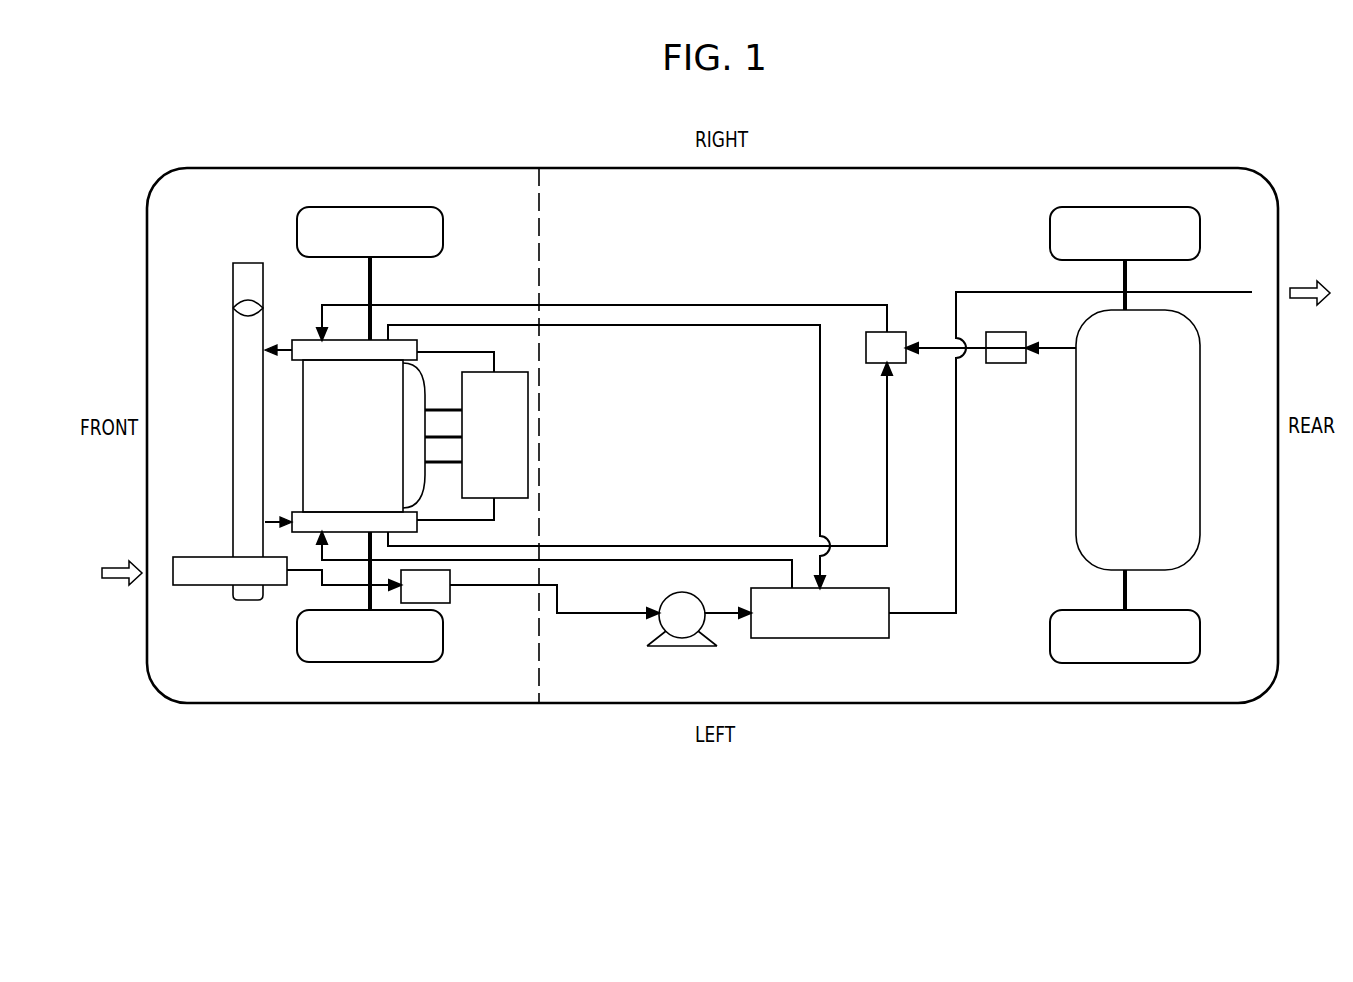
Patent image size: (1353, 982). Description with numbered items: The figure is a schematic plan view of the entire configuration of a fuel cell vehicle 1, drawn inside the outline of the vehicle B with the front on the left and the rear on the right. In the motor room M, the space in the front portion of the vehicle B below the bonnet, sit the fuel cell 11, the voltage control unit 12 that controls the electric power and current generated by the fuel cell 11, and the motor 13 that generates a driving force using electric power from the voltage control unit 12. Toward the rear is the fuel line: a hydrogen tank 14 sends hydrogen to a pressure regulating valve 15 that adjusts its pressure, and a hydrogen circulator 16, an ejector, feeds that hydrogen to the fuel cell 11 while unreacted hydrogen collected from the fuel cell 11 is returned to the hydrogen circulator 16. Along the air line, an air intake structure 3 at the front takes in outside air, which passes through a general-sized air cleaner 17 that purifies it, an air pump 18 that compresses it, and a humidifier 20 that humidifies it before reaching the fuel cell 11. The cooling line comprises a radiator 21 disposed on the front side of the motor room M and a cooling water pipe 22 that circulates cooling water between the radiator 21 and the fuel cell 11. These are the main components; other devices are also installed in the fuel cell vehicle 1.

The fuel cell vehicle 1 is at (1240, 140).
The air intake structure 3 is at (207, 578).
The fuel cell 11 is at (368, 449).
The voltage control unit 12 is at (510, 449).
The motor 13 is at (419, 372).
The hydrogen tank 14 is at (1153, 449).
The pressure regulating valve 15 is at (1020, 360).
The hydrogen circulator 16 is at (900, 360).
The air cleaner 17 is at (440, 600).
The air pump 18 is at (697, 628).
The humidifier 20 is at (835, 626).
The radiator 21 is at (233, 432).
The cooling water pipe 22 is at (283, 338).
The vehicle B is at (262, 168).
The motor room M is at (206, 230).